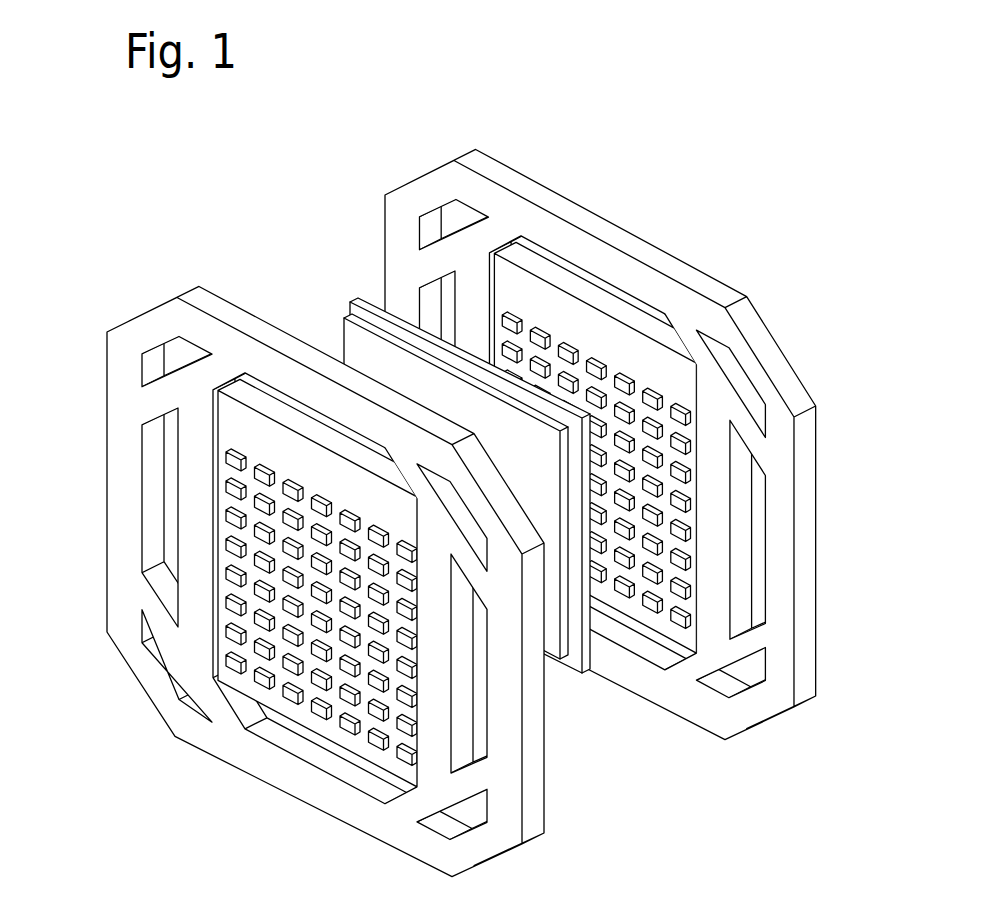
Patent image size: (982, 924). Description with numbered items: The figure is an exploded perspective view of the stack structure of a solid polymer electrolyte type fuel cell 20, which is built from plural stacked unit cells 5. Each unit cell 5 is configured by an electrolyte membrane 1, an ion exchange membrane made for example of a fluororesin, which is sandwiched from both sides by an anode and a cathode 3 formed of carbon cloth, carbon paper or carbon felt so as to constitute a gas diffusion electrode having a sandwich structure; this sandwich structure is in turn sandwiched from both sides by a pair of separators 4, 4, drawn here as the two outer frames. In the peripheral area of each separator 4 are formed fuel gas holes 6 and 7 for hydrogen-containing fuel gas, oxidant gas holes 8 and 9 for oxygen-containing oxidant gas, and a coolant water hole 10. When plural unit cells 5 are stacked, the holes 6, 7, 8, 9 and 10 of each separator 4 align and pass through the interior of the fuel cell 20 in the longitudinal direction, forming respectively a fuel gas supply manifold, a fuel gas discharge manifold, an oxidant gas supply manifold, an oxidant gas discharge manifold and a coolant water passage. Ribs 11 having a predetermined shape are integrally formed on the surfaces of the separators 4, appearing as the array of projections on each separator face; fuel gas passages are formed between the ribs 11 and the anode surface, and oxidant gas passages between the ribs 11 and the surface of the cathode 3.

The electrolyte membrane 1 is at (573, 663).
The cathode 3 is at (330, 320).
The separator 4 is at (497, 845).
The unit cell 5 is at (448, 473).
The fuel gas hole 6 is at (600, 282).
The fuel gas hole 7 is at (283, 722).
The oxidant gas hole 8 is at (160, 528).
The oxidant gas hole 9 is at (762, 540).
The coolant water hole 10 is at (176, 346).
The ribs 11 is at (397, 737).
The solid polymer electrolyte type fuel cell 20 is at (458, 546).